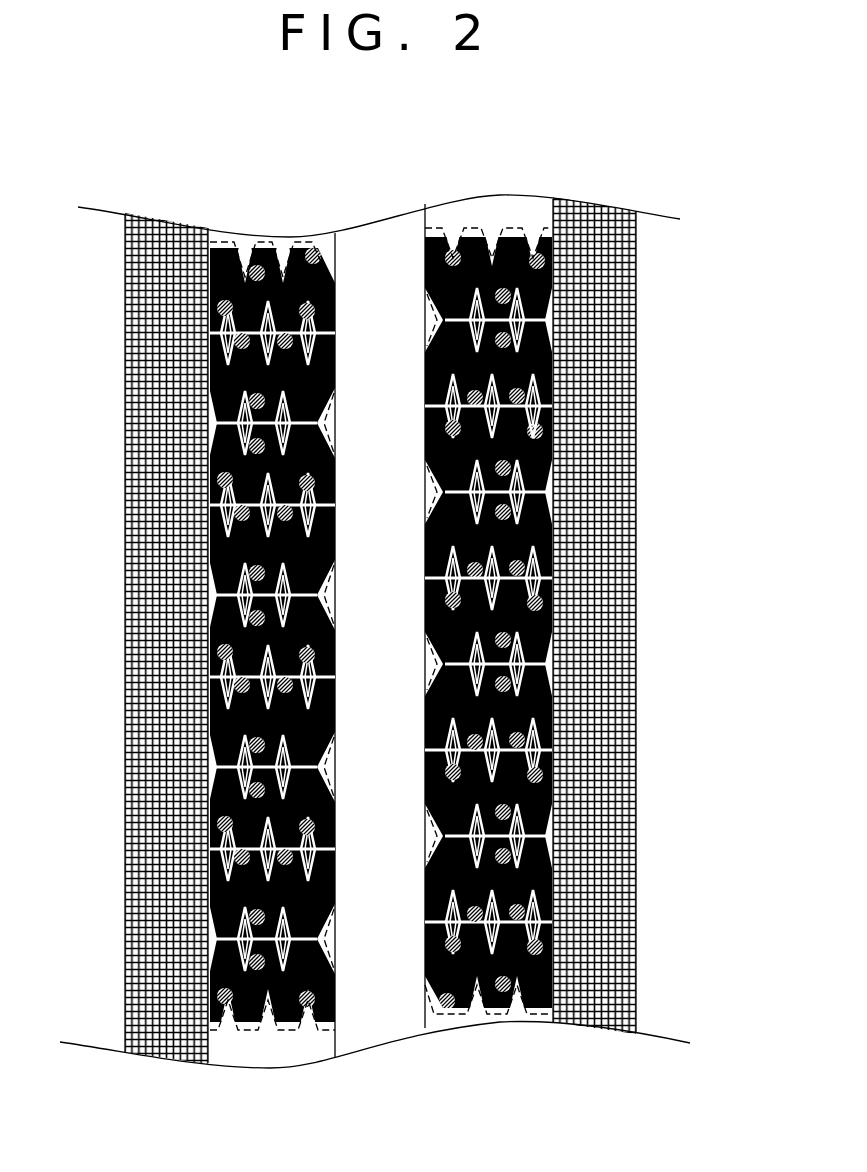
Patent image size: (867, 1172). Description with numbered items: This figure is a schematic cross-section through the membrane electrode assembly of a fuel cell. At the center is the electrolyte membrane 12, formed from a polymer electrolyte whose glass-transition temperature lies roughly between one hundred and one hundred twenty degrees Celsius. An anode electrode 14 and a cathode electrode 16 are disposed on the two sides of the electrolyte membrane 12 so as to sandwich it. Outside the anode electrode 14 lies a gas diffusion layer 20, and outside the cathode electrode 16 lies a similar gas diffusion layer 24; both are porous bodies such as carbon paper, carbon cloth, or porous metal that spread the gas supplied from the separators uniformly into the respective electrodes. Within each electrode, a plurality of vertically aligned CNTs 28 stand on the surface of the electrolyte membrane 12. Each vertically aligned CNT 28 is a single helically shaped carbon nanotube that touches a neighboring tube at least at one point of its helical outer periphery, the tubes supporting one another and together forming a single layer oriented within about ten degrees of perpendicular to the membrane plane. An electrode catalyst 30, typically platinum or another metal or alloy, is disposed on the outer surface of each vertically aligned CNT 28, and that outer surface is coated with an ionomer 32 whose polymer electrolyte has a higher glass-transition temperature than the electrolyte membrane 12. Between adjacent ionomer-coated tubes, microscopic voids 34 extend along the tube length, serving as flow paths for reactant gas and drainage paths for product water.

The electrolyte membrane 12 is at (378, 1000).
The anode electrode 14 is at (335, 1076).
The cathode electrode 16 is at (553, 1074).
The gas diffusion layer 20 is at (125, 893).
The gas diffusion layer 24 is at (636, 940).
The vertically aligned CNT 28 is at (553, 492).
The electrode catalyst 30 is at (537, 410).
The ionomer 32 is at (551, 407).
The voids 34 is at (532, 578).